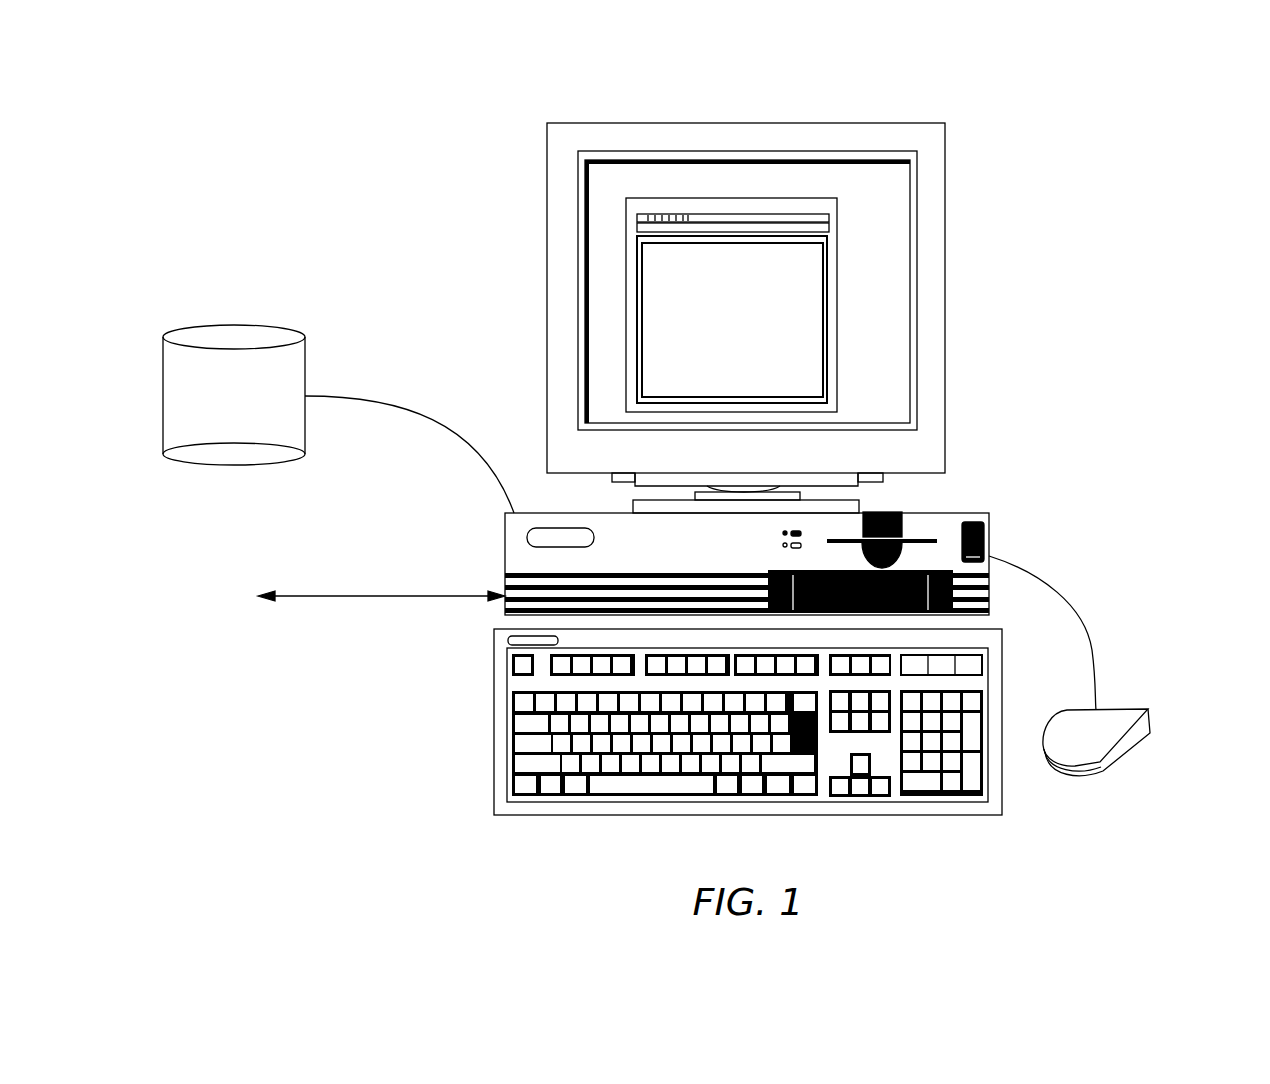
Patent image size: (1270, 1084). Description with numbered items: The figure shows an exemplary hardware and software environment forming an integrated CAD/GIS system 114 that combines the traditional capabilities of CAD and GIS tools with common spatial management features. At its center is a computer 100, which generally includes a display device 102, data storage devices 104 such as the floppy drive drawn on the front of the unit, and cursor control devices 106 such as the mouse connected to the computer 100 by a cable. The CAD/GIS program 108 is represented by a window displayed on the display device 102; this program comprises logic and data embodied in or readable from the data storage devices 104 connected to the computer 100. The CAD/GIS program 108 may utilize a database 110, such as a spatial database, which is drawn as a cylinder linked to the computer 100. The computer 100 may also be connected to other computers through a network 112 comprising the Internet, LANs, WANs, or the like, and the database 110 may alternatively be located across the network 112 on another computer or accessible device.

The computer 100 is at (879, 534).
The display device 102 is at (880, 305).
The data storage devices 104 is at (920, 533).
The cursor control devices 106 is at (1122, 772).
The CAD/GIS program 108 is at (919, 305).
The database 110 is at (338, 427).
The network 112 is at (324, 601).
The integrated CAD/GIS system 114 is at (472, 163).